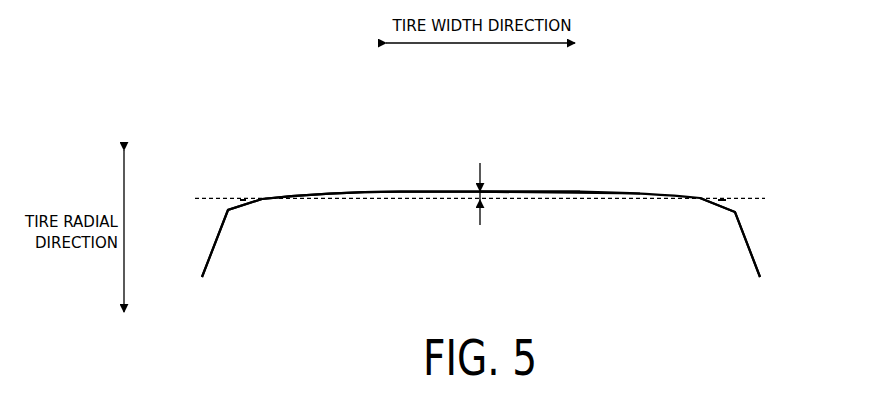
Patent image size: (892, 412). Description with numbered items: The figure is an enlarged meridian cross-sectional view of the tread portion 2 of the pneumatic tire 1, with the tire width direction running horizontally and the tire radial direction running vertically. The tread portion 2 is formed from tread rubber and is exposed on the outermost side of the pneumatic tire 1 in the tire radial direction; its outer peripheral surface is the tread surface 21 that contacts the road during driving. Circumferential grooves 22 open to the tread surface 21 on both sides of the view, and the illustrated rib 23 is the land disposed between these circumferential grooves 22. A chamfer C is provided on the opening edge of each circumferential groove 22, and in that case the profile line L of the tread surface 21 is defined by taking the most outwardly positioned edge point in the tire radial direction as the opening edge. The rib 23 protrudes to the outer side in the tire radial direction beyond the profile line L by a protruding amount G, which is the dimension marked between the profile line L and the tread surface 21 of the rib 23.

The pneumatic tire 1 is at (476, 170).
The tread portion 2 is at (635, 220).
The tread surface 21 is at (379, 189).
The circumferential groove 22 is at (215, 243).
The rib 23 is at (557, 220).
The chamfer C is at (243, 202).
The protruding amount G is at (477, 196).
The profile line L is at (217, 198).